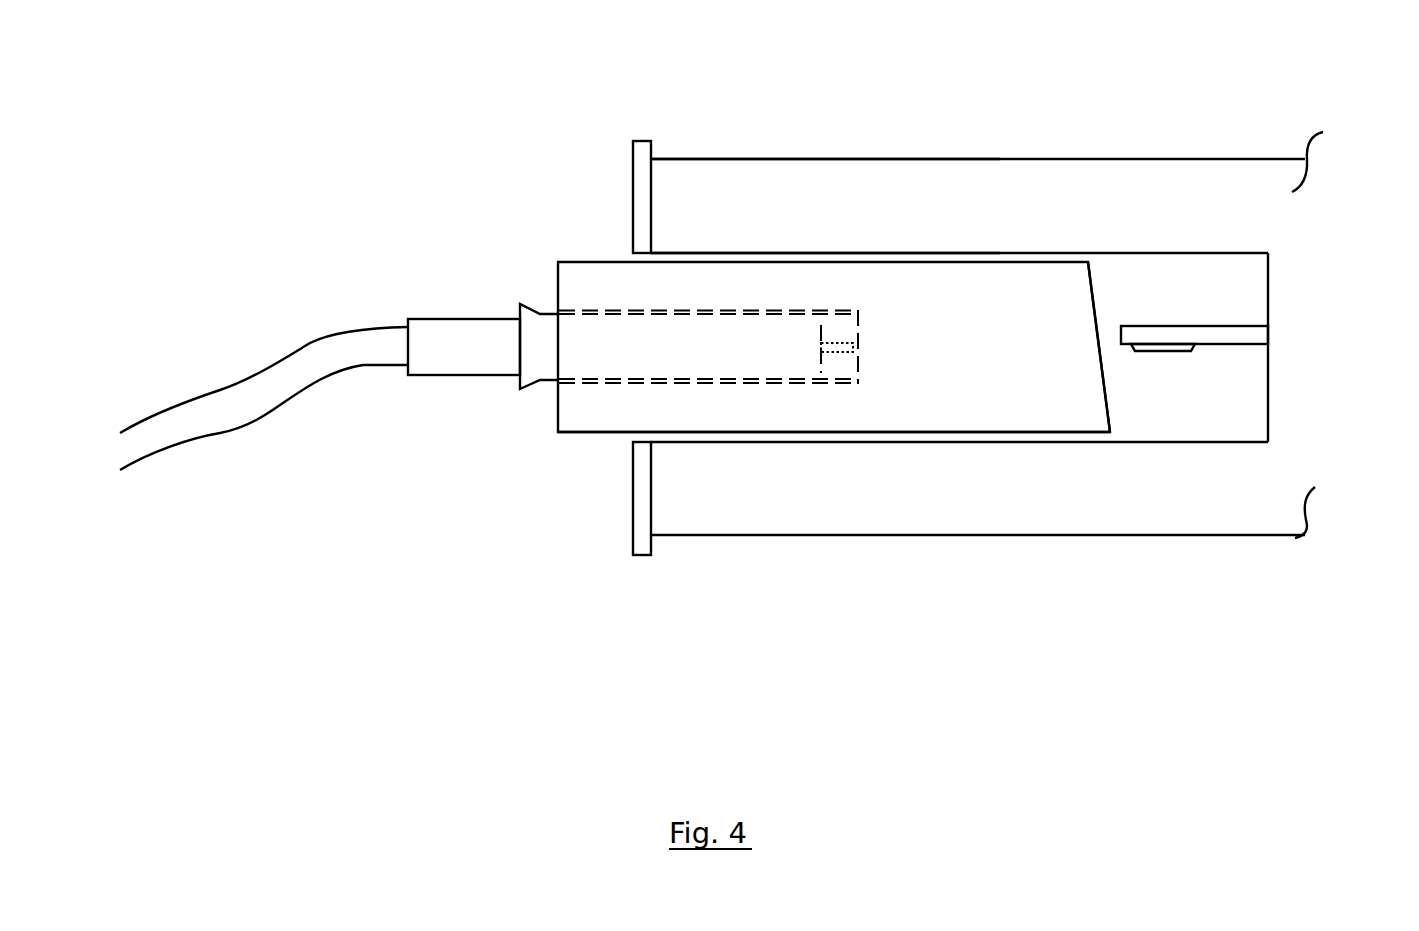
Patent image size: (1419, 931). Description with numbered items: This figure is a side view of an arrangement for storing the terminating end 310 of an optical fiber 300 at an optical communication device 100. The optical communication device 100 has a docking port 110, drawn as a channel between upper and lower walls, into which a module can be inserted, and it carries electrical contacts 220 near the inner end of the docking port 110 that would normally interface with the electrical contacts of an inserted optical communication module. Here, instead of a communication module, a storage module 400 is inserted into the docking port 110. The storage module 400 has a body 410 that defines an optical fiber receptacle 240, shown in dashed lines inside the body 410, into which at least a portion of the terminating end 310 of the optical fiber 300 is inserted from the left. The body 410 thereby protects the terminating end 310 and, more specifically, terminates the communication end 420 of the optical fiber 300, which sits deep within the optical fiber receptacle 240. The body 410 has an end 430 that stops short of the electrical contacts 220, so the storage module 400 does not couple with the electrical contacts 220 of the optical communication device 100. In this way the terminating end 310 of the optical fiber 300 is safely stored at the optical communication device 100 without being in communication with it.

The optical communication device 100 is at (927, 102).
The docking port 110 is at (753, 252).
The electrical contacts 220 is at (1153, 345).
The optical fiber receptacle 240 is at (593, 308).
The optical fiber 300 is at (232, 340).
The terminating end 310 is at (457, 382).
The storage module 400 is at (594, 243).
The body 410 is at (580, 433).
The communication end 420 is at (835, 353).
The end 430 is at (1107, 390).